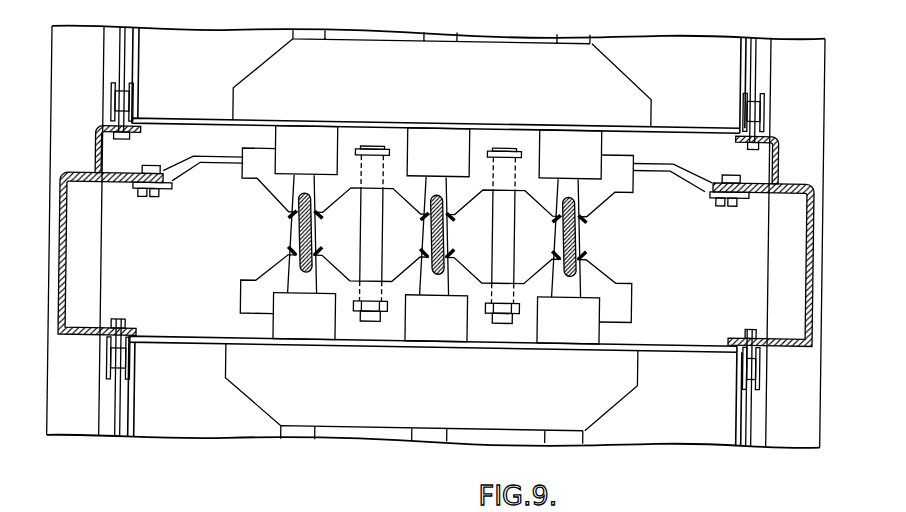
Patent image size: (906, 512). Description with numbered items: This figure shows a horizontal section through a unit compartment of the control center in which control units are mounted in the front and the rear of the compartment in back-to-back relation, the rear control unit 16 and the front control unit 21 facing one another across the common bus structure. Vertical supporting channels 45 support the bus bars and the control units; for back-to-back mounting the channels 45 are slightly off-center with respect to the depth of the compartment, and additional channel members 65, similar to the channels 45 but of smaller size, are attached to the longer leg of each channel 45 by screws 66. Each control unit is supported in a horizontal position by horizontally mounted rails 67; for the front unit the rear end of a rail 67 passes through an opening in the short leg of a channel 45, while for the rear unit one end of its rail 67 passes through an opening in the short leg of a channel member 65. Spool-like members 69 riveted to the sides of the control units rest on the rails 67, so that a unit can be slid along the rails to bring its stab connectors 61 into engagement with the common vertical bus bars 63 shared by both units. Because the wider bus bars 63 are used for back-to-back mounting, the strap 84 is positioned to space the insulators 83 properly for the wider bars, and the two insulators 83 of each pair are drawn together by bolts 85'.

The control unit 16 is at (193, 82).
The control unit 21 is at (191, 400).
The vertical supporting channel 45 is at (60, 264).
The stab connector 61 is at (315, 244).
The common vertical bus bar 63 is at (296, 226).
The additional channel member 65 is at (97, 156).
The screw 66 is at (156, 195).
The rail 67 is at (108, 57).
The spool-like member 69 is at (108, 99).
The insulator 83 is at (247, 172).
The strap 84 is at (200, 157).
The bolt 85' is at (437, 235).